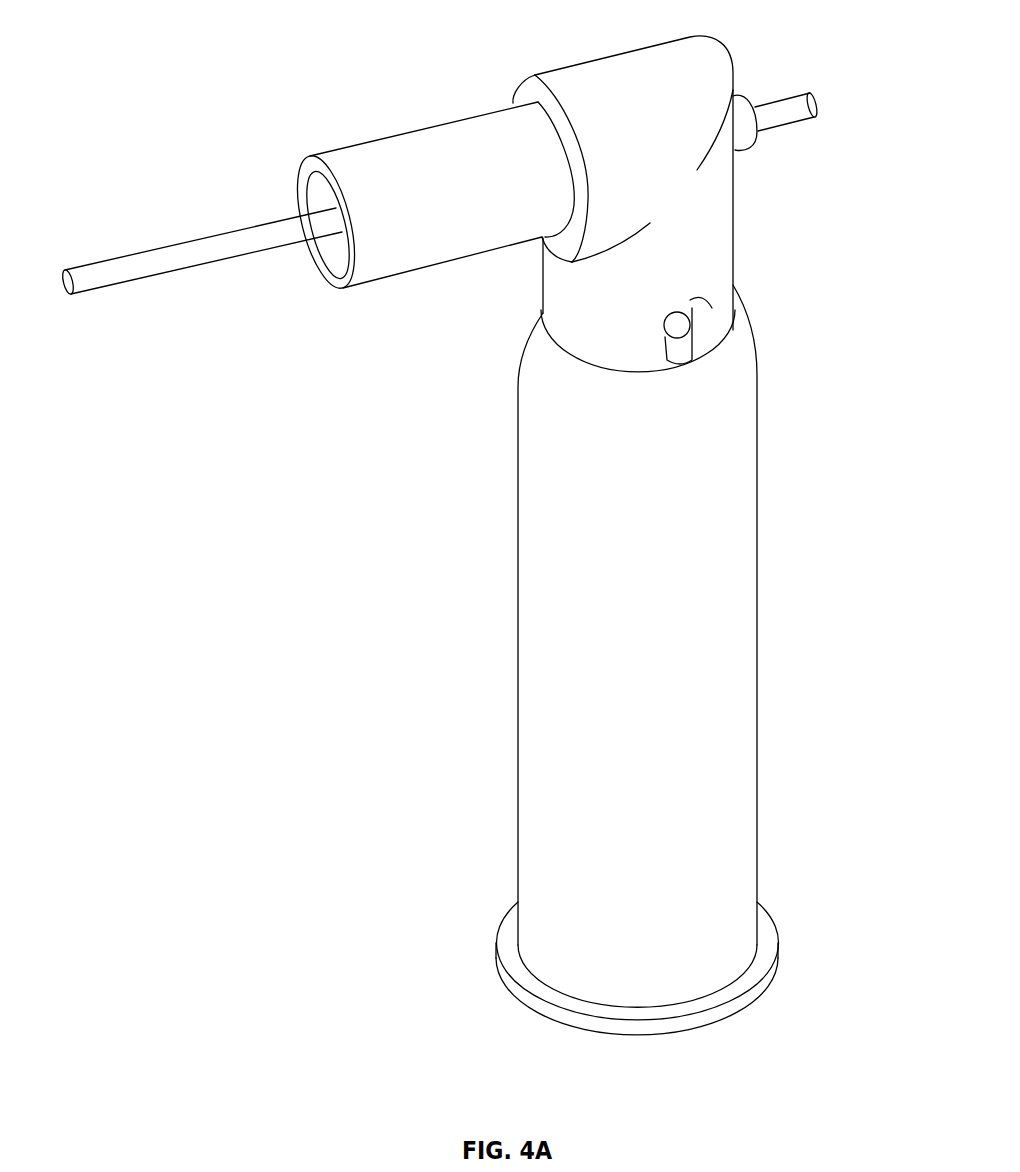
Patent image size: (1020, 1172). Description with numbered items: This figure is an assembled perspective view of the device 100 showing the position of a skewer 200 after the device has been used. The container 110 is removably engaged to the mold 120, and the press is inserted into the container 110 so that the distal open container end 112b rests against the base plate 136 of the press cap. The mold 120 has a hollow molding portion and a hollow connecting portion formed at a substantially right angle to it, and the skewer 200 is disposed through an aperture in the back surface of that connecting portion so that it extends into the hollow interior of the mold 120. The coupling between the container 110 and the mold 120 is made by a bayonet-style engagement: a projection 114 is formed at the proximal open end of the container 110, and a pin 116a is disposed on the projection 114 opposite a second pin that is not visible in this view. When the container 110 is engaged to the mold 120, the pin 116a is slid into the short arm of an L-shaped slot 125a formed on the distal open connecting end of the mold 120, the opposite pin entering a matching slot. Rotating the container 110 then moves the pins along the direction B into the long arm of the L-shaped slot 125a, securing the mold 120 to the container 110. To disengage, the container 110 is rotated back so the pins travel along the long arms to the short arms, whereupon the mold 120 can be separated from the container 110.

The device 100 is at (337, 77).
The skewer 200 is at (152, 248).
The mold 120 is at (757, 207).
The container 110 is at (782, 532).
The distal open container end 112b is at (749, 963).
The base plate 136 is at (747, 997).
The pin 116a is at (665, 323).
The projection 114 is at (665, 343).
The L-shaped slot 125a is at (699, 301).
The direction of pin movement B is at (693, 322).